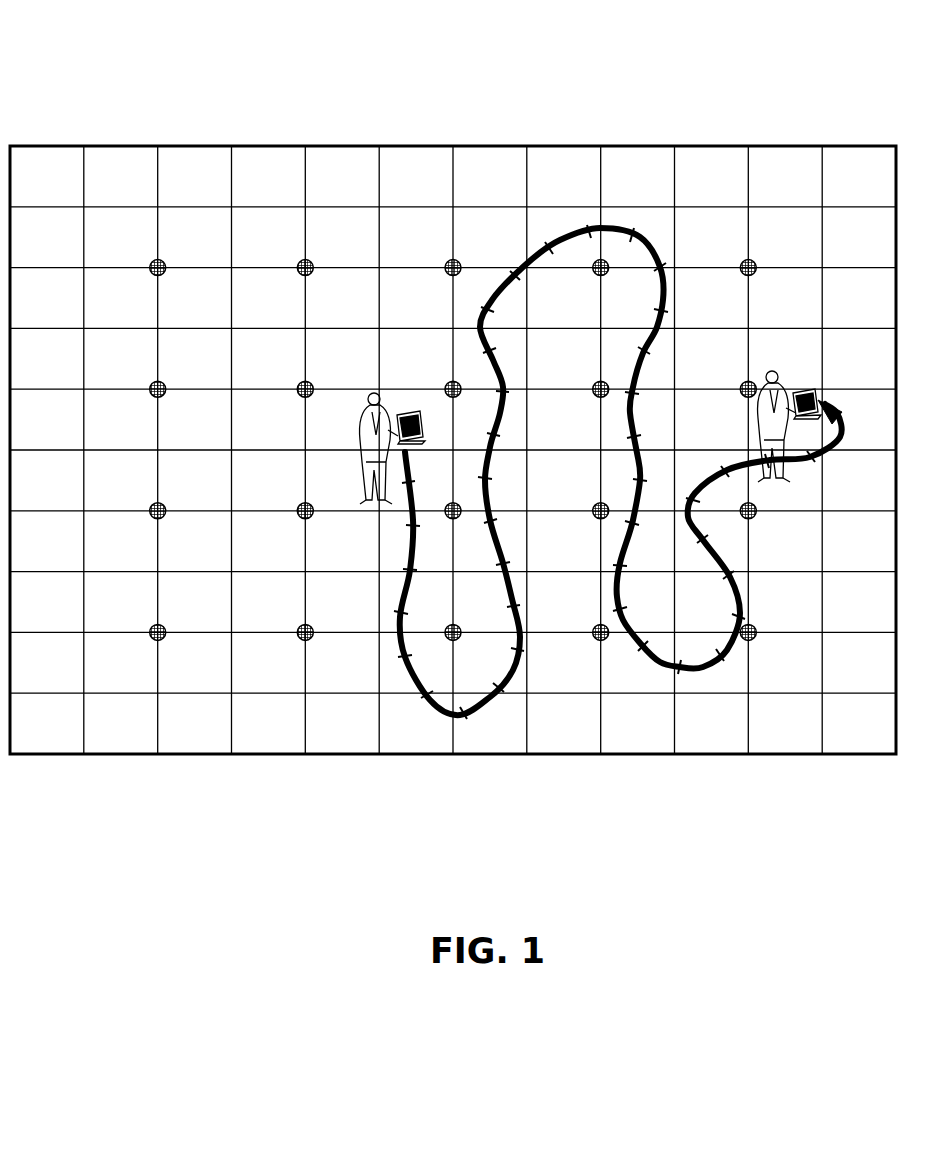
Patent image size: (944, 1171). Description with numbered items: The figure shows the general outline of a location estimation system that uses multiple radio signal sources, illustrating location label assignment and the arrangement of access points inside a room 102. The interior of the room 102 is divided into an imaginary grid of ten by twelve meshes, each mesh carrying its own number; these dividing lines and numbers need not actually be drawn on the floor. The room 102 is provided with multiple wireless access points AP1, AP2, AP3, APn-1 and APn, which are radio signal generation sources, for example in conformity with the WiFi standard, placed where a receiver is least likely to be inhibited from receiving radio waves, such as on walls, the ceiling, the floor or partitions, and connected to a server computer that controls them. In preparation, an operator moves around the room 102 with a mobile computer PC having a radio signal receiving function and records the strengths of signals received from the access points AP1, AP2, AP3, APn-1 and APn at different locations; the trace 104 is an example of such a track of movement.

The room 102 is at (114, 141).
The trace 104 is at (465, 720).
The mobile computer PC is at (410, 413).
The wireless access point AP1 is at (158, 260).
The wireless access point AP2 is at (305, 260).
The wireless access point AP3 is at (453, 260).
The wireless access point APn-1 is at (604, 640).
The wireless access point APn is at (752, 641).